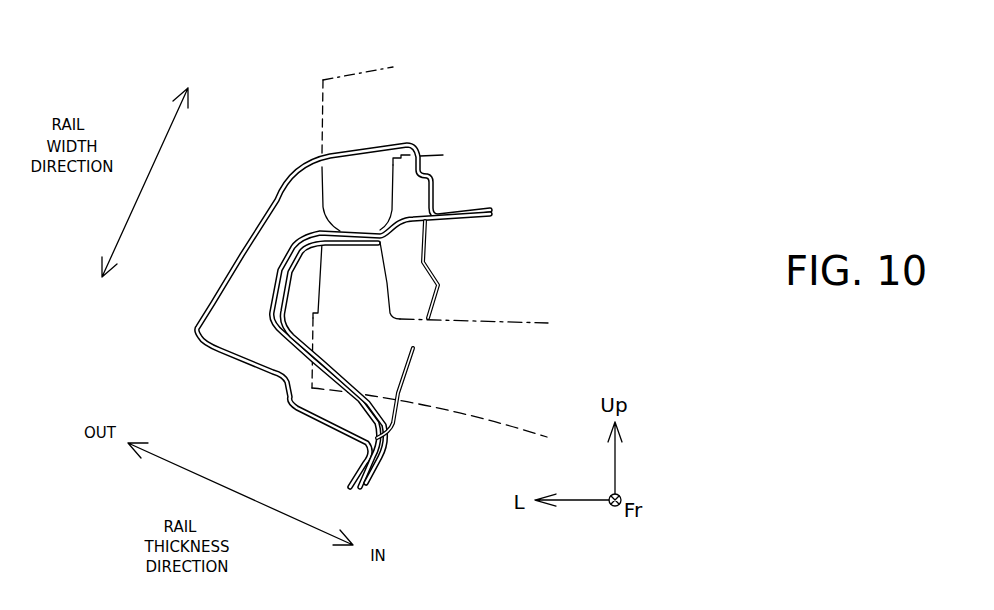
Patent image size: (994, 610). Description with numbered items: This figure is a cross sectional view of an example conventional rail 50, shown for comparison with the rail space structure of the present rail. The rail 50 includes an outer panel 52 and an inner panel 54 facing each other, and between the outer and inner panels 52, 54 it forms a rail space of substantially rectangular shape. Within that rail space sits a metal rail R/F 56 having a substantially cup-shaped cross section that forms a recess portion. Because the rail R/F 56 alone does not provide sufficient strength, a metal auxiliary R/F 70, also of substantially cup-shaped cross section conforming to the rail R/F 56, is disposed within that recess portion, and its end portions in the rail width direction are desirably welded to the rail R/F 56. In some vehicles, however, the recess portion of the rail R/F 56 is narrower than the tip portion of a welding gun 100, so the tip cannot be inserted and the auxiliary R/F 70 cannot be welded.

The conventional rail 50 is at (342, 265).
The outer panel 52 is at (288, 187).
The inner panel 54 is at (433, 268).
The rail R/F 56 is at (270, 307).
The auxiliary R/F 70 is at (290, 267).
The welding gun 100 is at (510, 322).